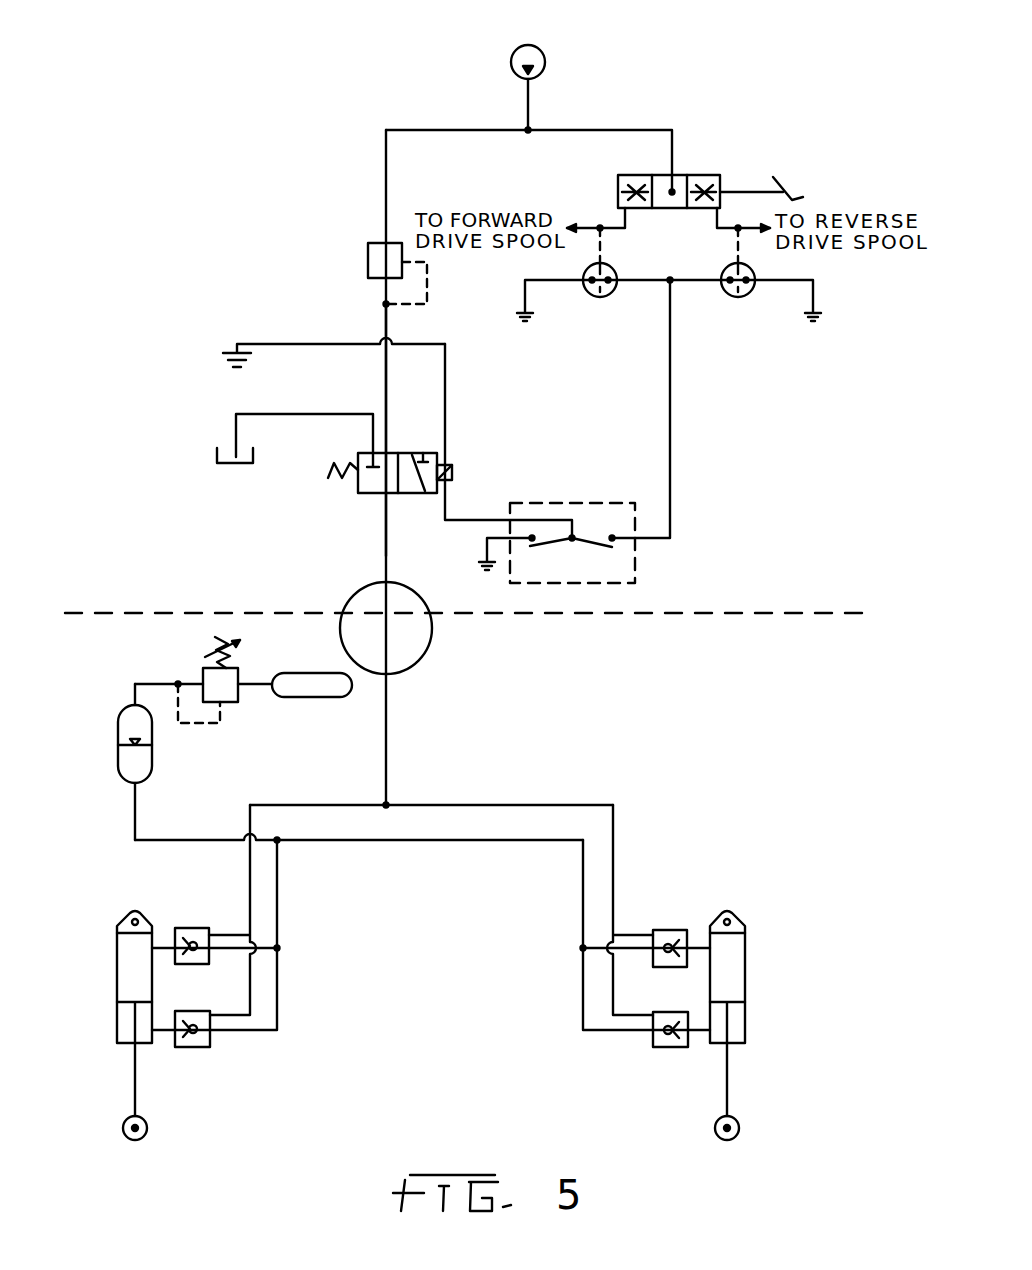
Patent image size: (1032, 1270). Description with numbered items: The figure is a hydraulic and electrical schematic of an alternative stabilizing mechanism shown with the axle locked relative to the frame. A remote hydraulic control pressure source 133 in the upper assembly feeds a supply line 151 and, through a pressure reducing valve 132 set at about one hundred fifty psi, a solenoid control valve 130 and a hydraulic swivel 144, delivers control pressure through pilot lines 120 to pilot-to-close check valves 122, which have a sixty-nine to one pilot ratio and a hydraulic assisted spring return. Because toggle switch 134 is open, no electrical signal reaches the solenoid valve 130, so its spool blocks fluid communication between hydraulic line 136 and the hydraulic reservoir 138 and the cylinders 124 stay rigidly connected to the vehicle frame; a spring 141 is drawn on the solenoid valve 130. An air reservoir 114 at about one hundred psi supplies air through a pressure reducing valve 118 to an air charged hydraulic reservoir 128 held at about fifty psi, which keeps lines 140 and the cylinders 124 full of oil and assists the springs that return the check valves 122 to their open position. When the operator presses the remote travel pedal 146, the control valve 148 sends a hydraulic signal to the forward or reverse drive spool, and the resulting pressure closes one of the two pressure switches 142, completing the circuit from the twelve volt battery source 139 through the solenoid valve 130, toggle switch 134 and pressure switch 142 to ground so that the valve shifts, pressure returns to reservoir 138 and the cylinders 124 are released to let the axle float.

The air reservoir 114 is at (305, 673).
The pressure reducing valve 118 is at (203, 676).
The pilot lines 120 is at (227, 935).
The pilot-to-close check valve 122 is at (190, 928).
The cylinders 124 is at (125, 980).
The air charged hydraulic reservoir 128 is at (118, 757).
The solenoid control valve 130 is at (372, 495).
The pressure reducing valve 132 is at (368, 258).
The remote hydraulic control pressure source 133 is at (545, 52).
The toggle switch 134 is at (635, 578).
The hydraulic line 136 is at (386, 556).
The hydraulic reservoir 138 is at (227, 465).
The battery source 139 is at (222, 358).
The lines 140 is at (437, 842).
The spring 141 is at (340, 470).
The pressure switch 142 is at (597, 298).
The hydraulic swivel 144 is at (413, 655).
The remote travel pedal 146 is at (790, 196).
The control valve 148 is at (680, 175).
The supply line 151 is at (584, 130).